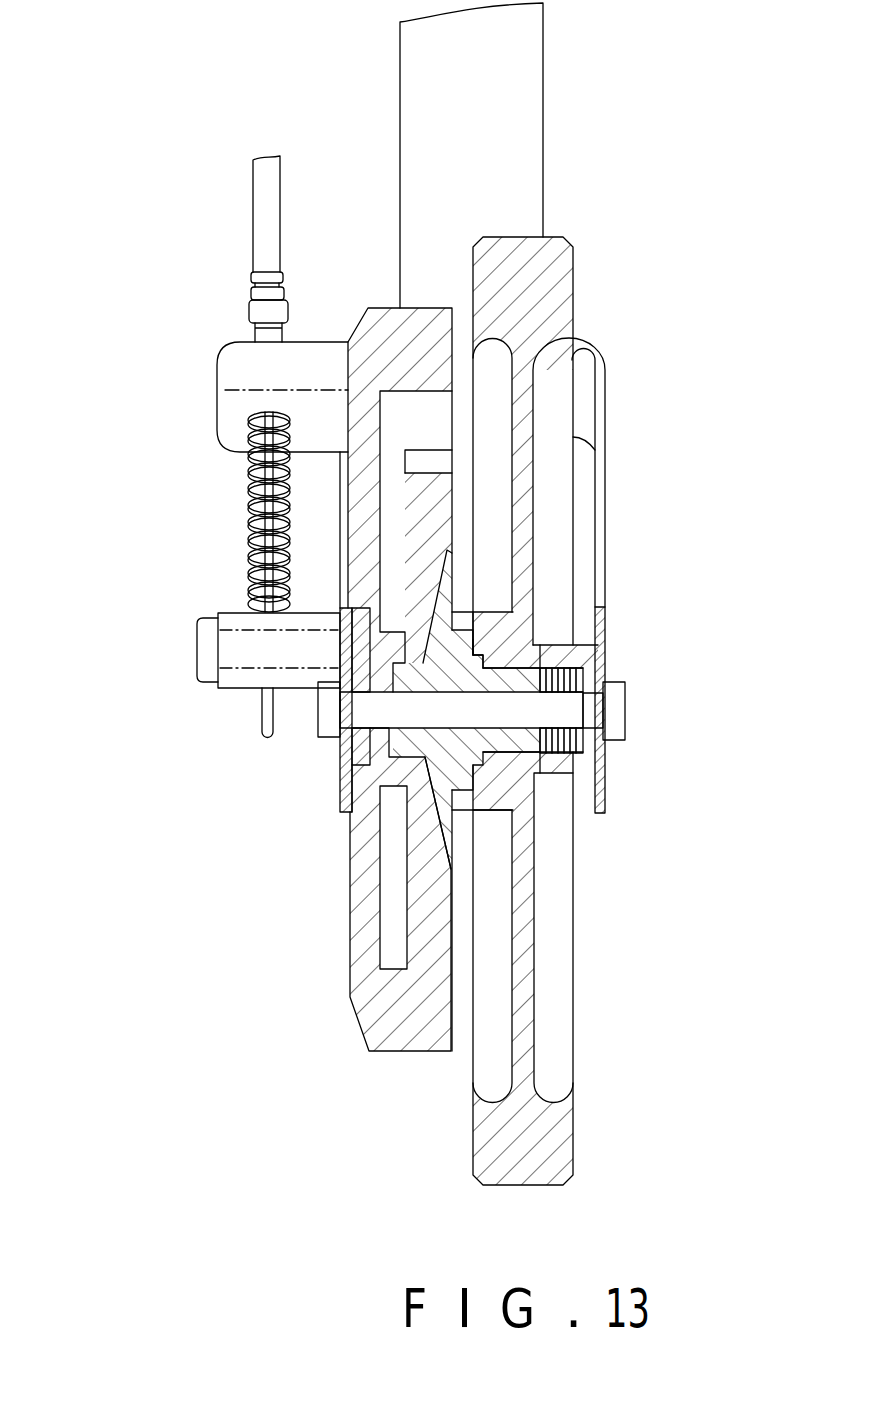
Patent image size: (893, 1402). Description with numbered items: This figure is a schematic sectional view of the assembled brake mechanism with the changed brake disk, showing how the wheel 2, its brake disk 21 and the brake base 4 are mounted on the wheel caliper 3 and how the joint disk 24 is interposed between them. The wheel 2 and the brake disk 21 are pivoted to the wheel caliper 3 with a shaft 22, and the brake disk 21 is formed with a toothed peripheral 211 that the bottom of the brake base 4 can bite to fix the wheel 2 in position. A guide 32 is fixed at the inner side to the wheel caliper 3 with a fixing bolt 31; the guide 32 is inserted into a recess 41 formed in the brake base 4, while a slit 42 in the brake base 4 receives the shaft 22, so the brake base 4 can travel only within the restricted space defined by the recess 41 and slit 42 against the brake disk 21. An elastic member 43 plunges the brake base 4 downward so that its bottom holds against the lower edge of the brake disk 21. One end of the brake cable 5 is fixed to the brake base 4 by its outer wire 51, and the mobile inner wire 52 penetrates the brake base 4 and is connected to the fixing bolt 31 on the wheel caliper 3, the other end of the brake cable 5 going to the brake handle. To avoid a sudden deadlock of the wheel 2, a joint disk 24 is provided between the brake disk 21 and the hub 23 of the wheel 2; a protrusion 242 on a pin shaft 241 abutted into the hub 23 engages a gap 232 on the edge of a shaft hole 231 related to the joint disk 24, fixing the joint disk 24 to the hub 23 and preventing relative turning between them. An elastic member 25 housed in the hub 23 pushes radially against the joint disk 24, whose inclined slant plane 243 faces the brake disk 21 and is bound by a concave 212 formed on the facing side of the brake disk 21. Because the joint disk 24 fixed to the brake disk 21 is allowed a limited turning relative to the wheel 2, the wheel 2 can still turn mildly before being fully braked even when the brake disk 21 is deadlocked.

The wheel 2 is at (540, 265).
The brake disk 21 is at (438, 494).
The toothed peripheral 211 is at (438, 457).
The concave 212 is at (450, 582).
The slant plane 243 is at (438, 813).
The wheel caliper 3 is at (600, 397).
The hub 23 is at (483, 777).
The gap 232 is at (480, 640).
The protrusion 242 is at (478, 652).
The pin shaft 241 is at (512, 738).
The shaft hole 231 is at (605, 683).
The joint disk 24 is at (490, 697).
The elastic member 25 is at (580, 742).
The shaft 22 is at (355, 712).
The brake base 4 is at (377, 953).
The recess 41 is at (382, 733).
The slit 42 is at (360, 740).
The elastic member 43 is at (247, 540).
The fixing bolt 31 is at (238, 648).
The guide 32 is at (340, 680).
The brake cable 5 is at (212, 313).
The outer wire 51 is at (265, 250).
The inner wire 52 is at (258, 470).